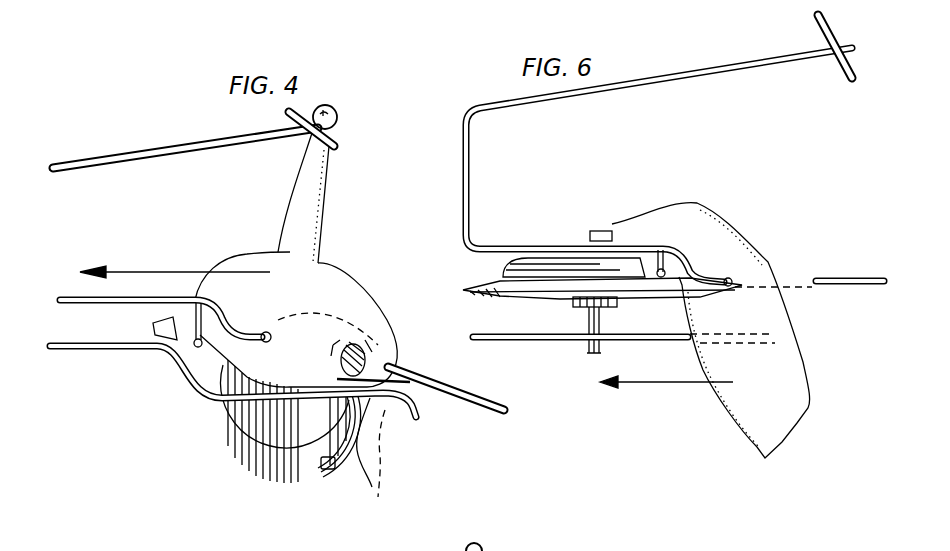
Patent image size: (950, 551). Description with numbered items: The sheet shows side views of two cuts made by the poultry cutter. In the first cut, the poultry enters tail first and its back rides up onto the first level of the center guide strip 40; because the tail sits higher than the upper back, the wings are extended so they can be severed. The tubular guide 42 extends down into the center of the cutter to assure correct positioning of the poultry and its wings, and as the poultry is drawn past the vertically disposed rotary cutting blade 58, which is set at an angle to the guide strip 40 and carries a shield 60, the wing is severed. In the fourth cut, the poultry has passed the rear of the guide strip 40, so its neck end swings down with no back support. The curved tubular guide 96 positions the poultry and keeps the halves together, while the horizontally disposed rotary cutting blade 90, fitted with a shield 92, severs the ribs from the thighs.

In FIG. 4, the center guide strip 40 is at (115, 349).
In FIG. 6, the center guide strip 40 is at (833, 280).
In FIG. 4, the tubular guide 42 is at (496, 409).
In FIG. 4, the rotary cutting blade 58 is at (344, 468).
In FIG. 4, the shield 60 is at (233, 424).
In FIG. 6, the rotary cutting blade 90 is at (482, 289).
In FIG. 6, the shield 92 is at (527, 270).
In FIG. 6, the curved tubular guide 96 is at (548, 342).